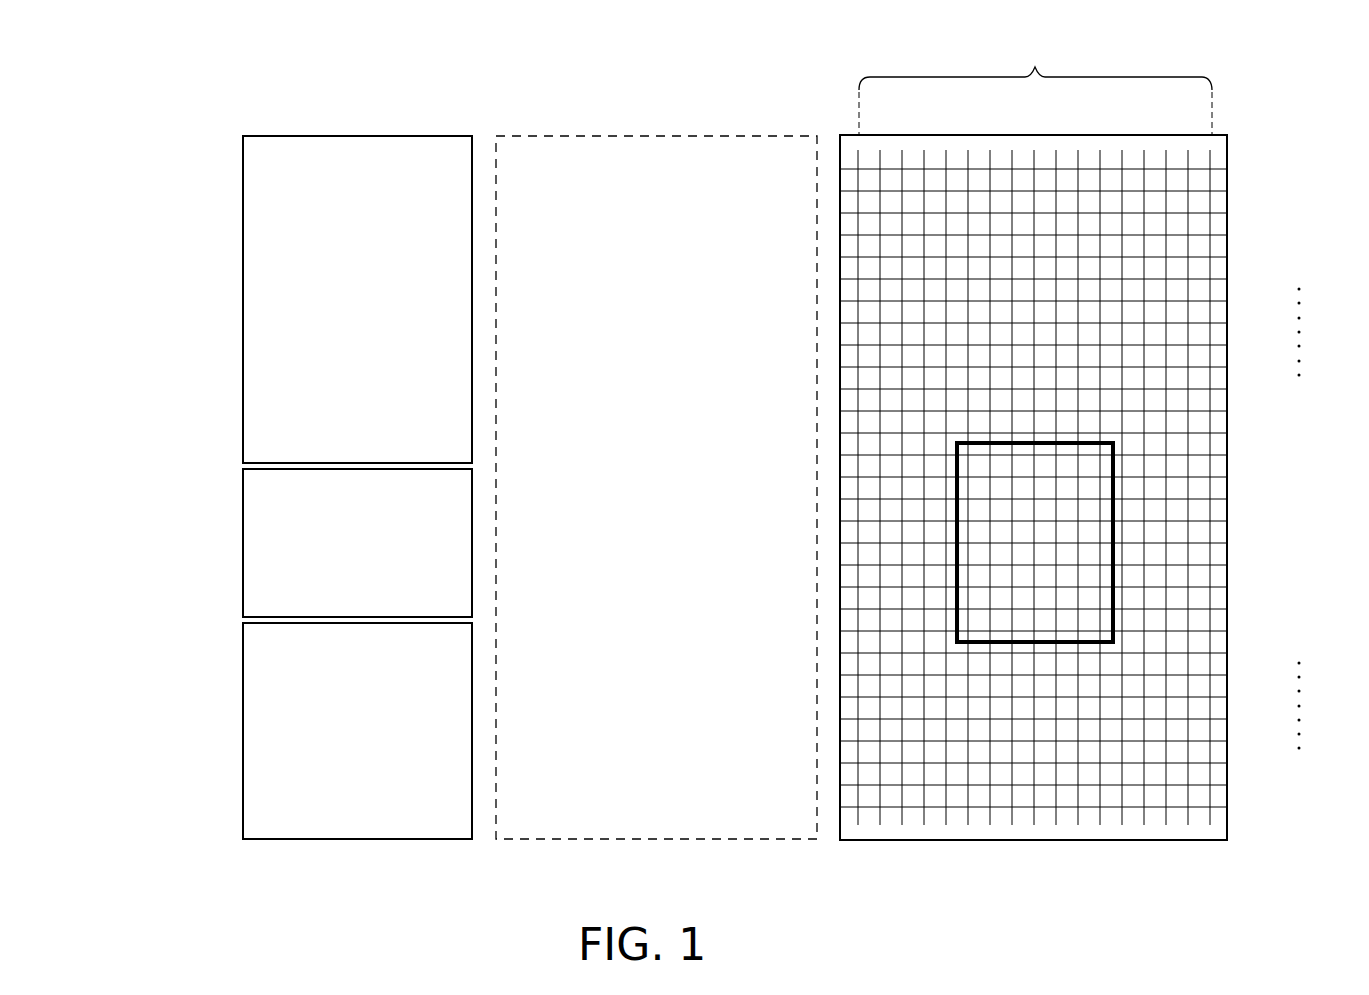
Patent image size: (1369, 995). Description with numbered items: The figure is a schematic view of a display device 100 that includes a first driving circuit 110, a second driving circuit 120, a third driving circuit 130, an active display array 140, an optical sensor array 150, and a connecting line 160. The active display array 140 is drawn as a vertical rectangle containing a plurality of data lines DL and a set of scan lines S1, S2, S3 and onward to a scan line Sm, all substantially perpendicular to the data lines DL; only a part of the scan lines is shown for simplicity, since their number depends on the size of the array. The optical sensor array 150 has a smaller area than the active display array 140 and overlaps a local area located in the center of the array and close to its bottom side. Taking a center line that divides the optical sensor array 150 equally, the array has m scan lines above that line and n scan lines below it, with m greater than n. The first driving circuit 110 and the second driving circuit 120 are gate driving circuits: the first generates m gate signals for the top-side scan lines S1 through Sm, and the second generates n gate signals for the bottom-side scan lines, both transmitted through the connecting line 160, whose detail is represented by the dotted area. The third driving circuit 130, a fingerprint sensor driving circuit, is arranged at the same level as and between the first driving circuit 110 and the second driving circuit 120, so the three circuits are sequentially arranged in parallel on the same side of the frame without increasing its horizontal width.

The display device 100 is at (210, 98).
The first driving circuit 110 is at (243, 298).
The second driving circuit 120 is at (243, 730).
The third driving circuit 130 is at (243, 542).
The active display array 140 is at (888, 840).
The optical sensor array 150 is at (1048, 644).
The connecting line 160 is at (718, 136).
The data lines DL is at (1035, 88).
The first scan line S1 is at (1227, 169).
The second scan line S2 is at (1227, 191).
The third scan line S3 is at (1227, 213).
The m-th scan line Sm is at (1227, 543).